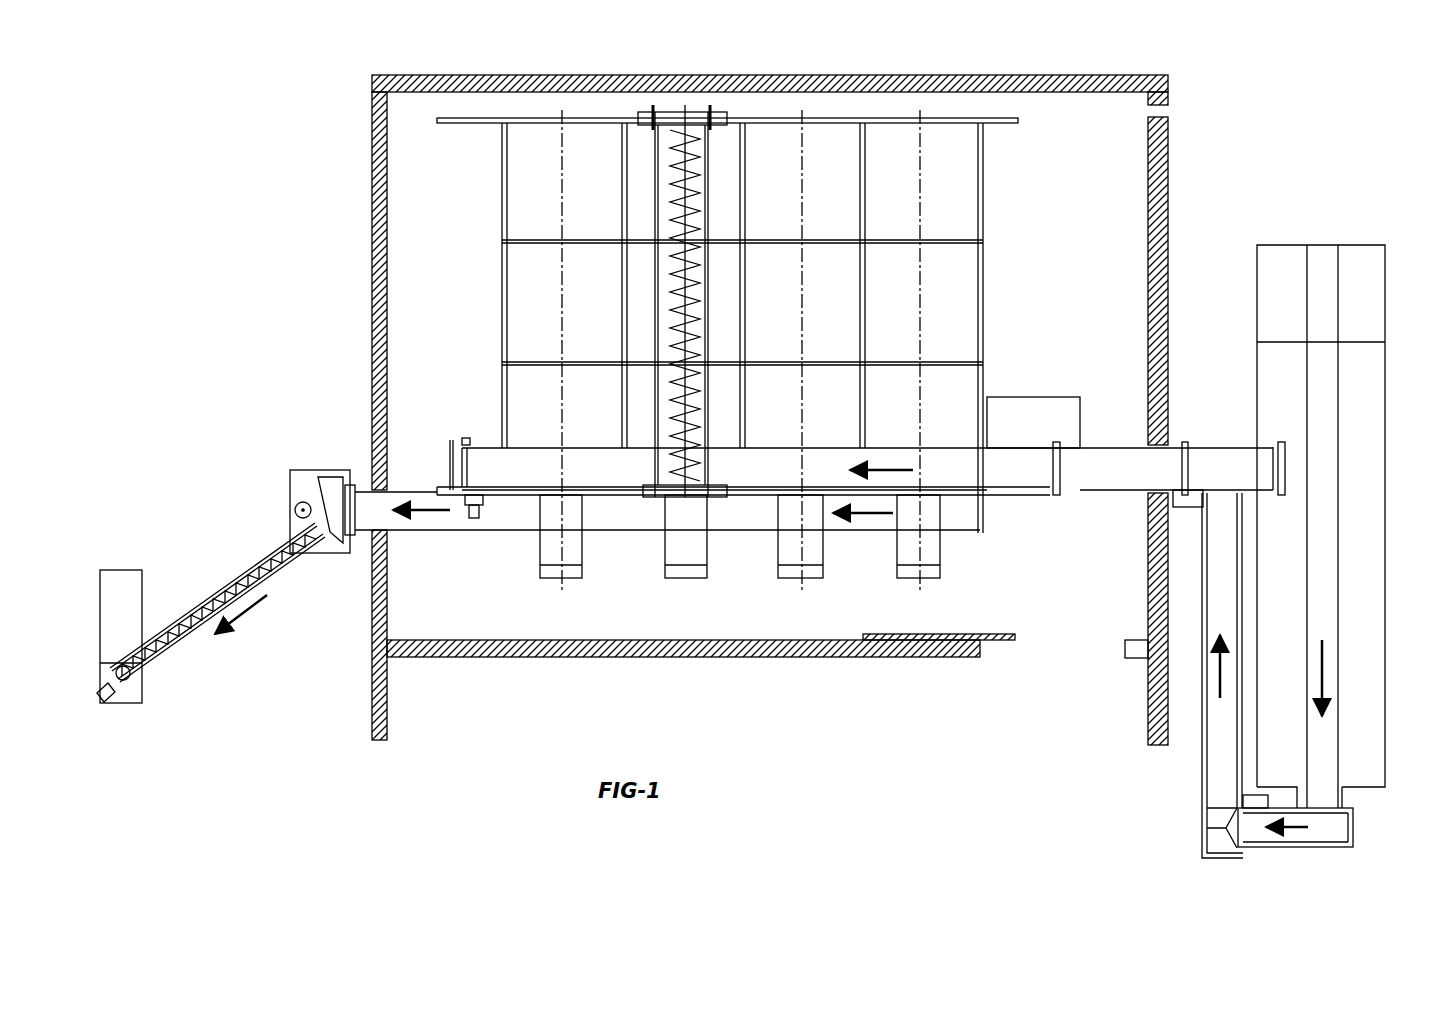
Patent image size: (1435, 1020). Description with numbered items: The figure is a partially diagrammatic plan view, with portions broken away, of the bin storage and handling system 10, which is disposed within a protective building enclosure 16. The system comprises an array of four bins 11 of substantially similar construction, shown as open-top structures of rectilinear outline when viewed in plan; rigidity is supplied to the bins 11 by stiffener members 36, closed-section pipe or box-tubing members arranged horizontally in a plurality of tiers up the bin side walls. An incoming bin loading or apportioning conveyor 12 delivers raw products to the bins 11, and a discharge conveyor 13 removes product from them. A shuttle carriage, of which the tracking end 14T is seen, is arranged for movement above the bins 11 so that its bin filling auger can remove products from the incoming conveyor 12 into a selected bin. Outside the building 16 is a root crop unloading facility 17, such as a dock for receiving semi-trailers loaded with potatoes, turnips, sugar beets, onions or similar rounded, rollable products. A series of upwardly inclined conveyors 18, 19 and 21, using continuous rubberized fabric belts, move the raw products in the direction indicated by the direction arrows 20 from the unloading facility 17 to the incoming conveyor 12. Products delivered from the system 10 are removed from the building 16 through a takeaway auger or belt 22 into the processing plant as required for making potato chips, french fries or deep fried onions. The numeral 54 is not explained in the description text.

The bin storage and handling system 10 is at (1036, 202).
The bins 11 is at (598, 323).
The incoming bin loading apportioning conveyor 12 is at (1080, 490).
The discharge conveyor 13 is at (510, 522).
The tracking end 14T is at (710, 113).
The protective building enclosure 16 is at (1163, 158).
The root crop unloading facility 17 is at (1314, 244).
The upwardly inclined conveyor 18 is at (1315, 398).
The upwardly inclined conveyor 19 is at (1338, 830).
The direction arrows 20 is at (1320, 676).
The upwardly inclined conveyor 21 is at (1222, 767).
The takeaway auger or belt 22 is at (228, 588).
The stiffener members 36 is at (507, 194).
The vertical screw conveyor 54 is at (655, 147).